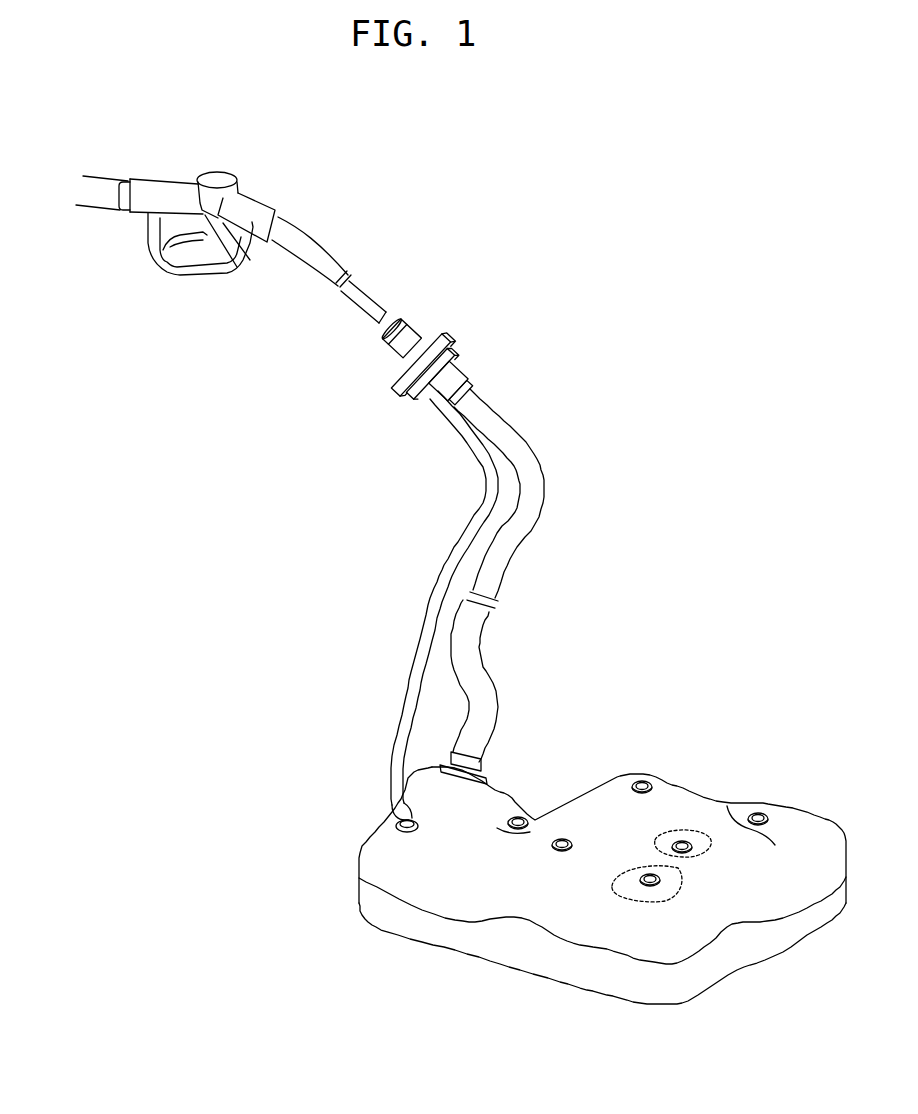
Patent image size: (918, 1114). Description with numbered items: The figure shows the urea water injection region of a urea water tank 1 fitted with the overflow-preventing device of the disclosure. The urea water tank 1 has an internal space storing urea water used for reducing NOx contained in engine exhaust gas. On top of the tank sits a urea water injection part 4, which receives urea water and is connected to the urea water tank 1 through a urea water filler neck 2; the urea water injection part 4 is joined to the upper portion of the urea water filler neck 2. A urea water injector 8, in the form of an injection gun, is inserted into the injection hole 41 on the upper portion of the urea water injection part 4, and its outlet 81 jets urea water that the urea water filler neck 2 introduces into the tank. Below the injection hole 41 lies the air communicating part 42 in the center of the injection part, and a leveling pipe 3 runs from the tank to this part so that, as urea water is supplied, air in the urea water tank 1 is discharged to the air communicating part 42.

The urea water tank 1 is at (684, 770).
The urea water filler neck 2 is at (530, 437).
The leveling pipe 3 is at (476, 474).
The urea water injection part 4 is at (425, 325).
The injection hole 41 is at (393, 318).
The air communicating part 42 is at (455, 333).
The urea water injector 8 is at (276, 201).
The outlet 81 is at (363, 312).